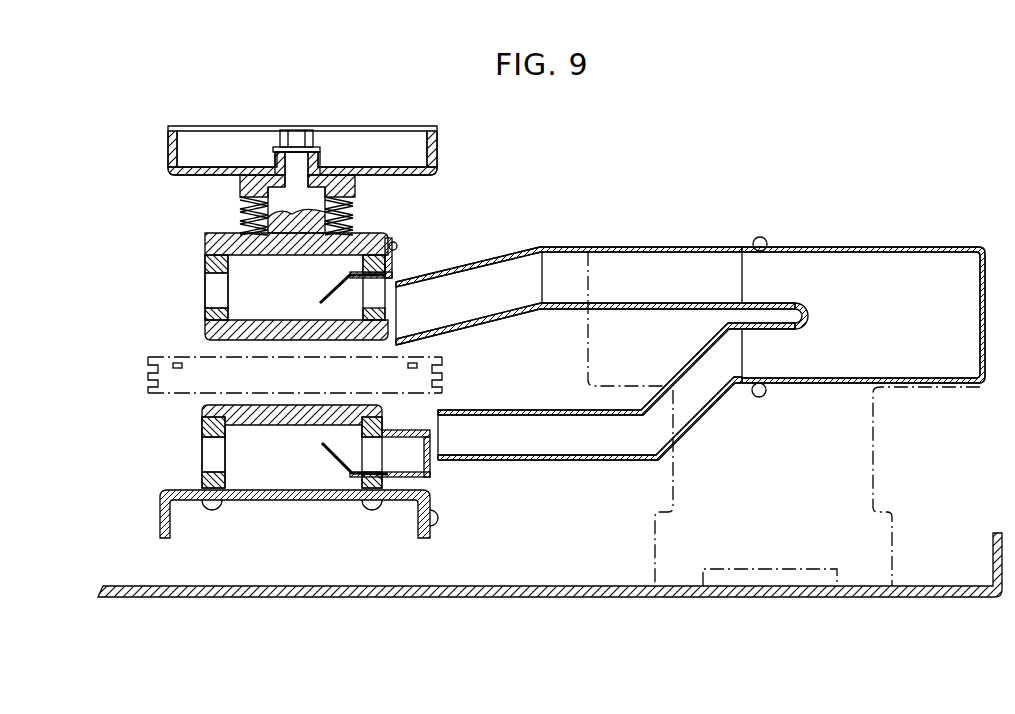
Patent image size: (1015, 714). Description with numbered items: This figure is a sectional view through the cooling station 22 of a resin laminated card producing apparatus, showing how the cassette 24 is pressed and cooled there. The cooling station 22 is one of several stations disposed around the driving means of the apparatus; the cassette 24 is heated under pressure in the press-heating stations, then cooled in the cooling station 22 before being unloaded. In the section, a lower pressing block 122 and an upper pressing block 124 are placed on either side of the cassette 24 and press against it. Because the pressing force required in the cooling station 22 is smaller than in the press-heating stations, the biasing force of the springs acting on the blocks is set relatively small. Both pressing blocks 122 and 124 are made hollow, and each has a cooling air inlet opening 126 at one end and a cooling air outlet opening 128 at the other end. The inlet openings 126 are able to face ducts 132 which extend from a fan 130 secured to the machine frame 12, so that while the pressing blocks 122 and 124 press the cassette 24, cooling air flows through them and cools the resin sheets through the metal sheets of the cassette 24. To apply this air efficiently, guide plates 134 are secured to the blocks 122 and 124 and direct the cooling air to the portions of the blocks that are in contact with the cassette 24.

The machine frame 12 is at (277, 598).
The cooling station 22 is at (690, 346).
The cassette 24 is at (143, 385).
The pressing block 122 is at (203, 428).
The pressing block 124 is at (205, 243).
The cooling air inlet opening 126 is at (378, 288).
The cooling air outlet opening 128 is at (217, 290).
The fan 130 is at (918, 247).
The duct 132 is at (650, 247).
The guide plate 134 is at (331, 293).